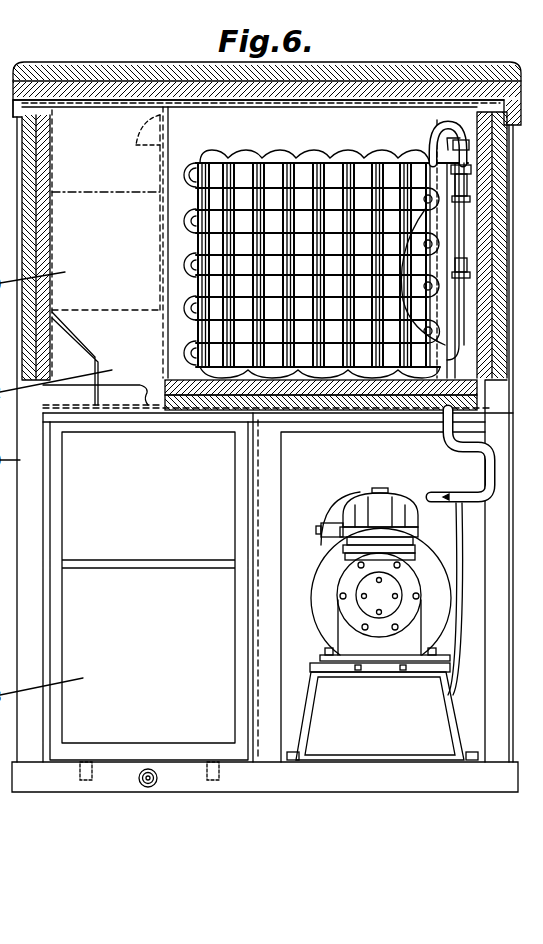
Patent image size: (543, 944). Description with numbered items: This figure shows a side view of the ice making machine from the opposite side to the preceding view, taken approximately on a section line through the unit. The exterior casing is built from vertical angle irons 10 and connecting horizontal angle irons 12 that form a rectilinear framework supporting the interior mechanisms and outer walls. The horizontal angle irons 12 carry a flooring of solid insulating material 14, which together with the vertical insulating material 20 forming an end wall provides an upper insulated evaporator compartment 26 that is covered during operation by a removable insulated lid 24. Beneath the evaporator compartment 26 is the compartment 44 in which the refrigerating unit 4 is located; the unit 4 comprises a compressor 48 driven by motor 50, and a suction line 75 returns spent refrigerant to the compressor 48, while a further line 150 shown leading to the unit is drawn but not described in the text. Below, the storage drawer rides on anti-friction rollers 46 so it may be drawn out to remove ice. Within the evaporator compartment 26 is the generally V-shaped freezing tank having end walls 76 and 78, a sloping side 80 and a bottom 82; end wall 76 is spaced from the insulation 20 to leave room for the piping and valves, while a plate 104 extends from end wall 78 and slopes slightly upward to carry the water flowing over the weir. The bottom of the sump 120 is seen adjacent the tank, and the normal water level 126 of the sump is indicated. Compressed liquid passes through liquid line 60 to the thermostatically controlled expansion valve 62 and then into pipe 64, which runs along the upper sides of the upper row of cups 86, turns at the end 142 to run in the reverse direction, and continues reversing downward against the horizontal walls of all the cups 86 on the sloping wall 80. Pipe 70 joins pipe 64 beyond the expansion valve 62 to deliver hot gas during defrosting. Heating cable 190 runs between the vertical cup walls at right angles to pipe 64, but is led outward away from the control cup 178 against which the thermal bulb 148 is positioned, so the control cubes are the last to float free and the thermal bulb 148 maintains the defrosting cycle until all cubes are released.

The refrigerating unit 4 is at (412, 735).
The vertical angle irons 10 is at (510, 444).
The horizontal angle irons 12 is at (392, 396).
The flooring of solid insulating material 14 is at (328, 396).
The end wall insulating material 20 is at (470, 175).
The removable insulated lid 24 is at (363, 80).
The evaporator compartment 26 is at (466, 357).
The compartment 44 is at (475, 590).
The anti-friction rollers 46 is at (88, 780).
The compressor 48 is at (410, 528).
The motor 50 is at (350, 585).
The liquid line 60 is at (466, 213).
The thermostatically controlled expansion valve 62 is at (470, 142).
The pipe 64 is at (412, 163).
The pipe 70 is at (433, 120).
The suction line 75 is at (340, 503).
The end wall 76 is at (430, 103).
The end wall 78 is at (165, 226).
The sloping side 80 is at (361, 117).
The bottom 82 is at (190, 372).
The cups 86 is at (255, 165).
The plate 104 is at (137, 132).
The bottom of the sump 120 is at (97, 310).
The normal water level 126 is at (80, 190).
The end 142 is at (185, 173).
The thermal bulb 148 is at (410, 244).
The discharge line 150 is at (445, 462).
The control cup 178 is at (470, 275).
The heating cable 190 is at (330, 158).